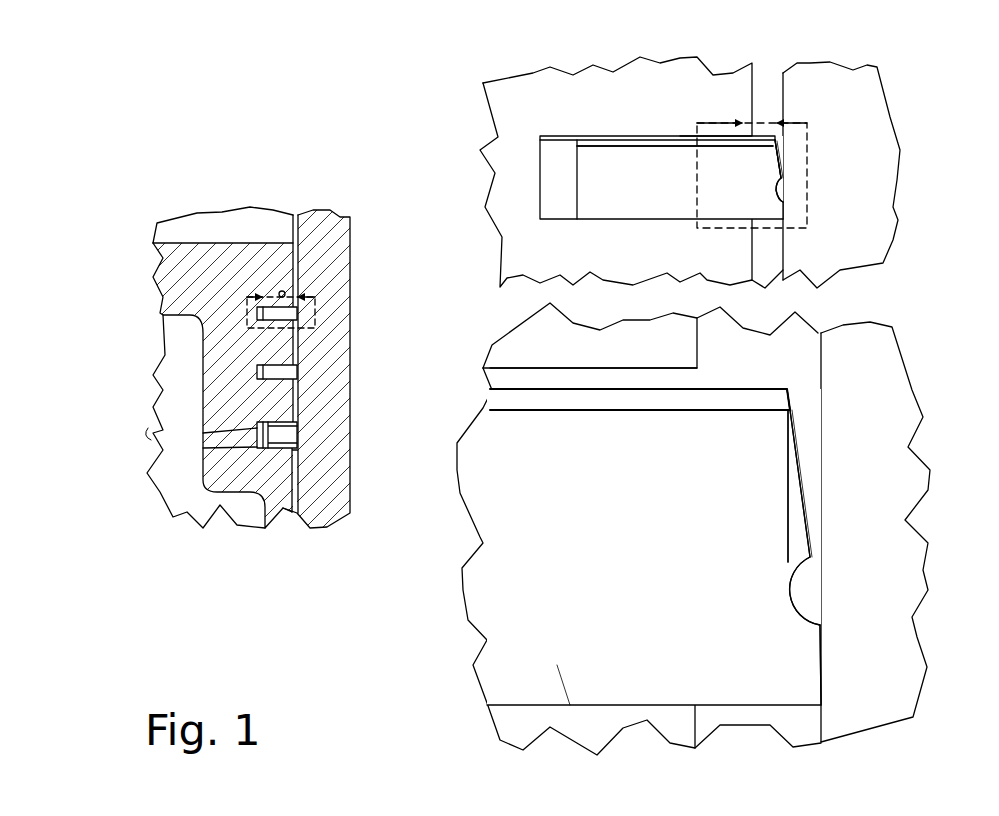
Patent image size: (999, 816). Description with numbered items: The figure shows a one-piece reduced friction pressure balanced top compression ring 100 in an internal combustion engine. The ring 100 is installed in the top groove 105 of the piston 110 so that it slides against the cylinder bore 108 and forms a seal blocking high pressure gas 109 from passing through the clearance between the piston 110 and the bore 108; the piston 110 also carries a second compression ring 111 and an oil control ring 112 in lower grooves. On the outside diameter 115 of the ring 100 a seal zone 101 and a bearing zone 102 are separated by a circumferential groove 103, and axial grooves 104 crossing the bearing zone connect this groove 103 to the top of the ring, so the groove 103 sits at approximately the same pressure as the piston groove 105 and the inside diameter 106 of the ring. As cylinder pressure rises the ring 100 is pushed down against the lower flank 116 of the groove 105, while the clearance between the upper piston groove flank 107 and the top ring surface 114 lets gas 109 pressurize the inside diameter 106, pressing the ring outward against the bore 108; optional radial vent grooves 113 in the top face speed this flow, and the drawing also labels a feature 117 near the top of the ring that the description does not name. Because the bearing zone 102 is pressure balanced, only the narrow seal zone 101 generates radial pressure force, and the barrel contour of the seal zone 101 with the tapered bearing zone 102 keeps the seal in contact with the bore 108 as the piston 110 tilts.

The ring 100 is at (284, 313).
The seal zone 101 is at (785, 212).
The bearing zone 102 is at (782, 178).
The circumferential groove 103 is at (780, 188).
The axial grooves 104 is at (781, 170).
The top groove 105 is at (259, 316).
The inside diameter 106 is at (577, 190).
The upper piston groove flank 107 is at (676, 136).
The cylinder bore 108 is at (333, 223).
The high pressure gas 109 is at (293, 242).
The piston 110 is at (250, 258).
The second compression ring 111 is at (285, 370).
The oil control ring 112 is at (285, 434).
The radial vent grooves 113 is at (780, 162).
The top ring surface 114 is at (767, 112).
The outside diameter 115 is at (820, 655).
The lower flank 116 is at (705, 261).
The top layer of pin 117 is at (612, 145).